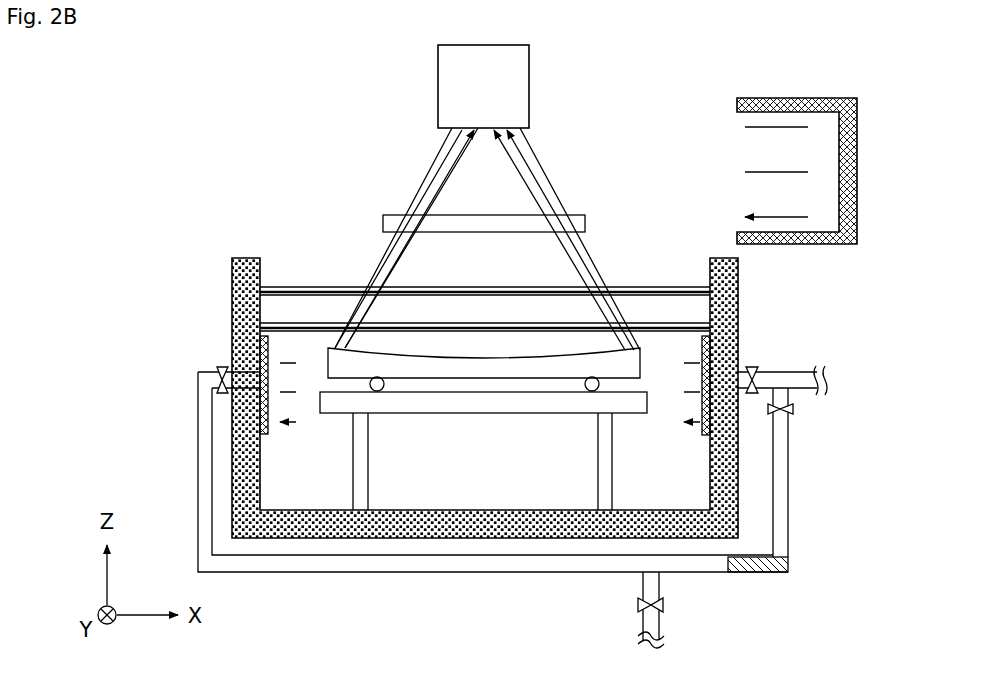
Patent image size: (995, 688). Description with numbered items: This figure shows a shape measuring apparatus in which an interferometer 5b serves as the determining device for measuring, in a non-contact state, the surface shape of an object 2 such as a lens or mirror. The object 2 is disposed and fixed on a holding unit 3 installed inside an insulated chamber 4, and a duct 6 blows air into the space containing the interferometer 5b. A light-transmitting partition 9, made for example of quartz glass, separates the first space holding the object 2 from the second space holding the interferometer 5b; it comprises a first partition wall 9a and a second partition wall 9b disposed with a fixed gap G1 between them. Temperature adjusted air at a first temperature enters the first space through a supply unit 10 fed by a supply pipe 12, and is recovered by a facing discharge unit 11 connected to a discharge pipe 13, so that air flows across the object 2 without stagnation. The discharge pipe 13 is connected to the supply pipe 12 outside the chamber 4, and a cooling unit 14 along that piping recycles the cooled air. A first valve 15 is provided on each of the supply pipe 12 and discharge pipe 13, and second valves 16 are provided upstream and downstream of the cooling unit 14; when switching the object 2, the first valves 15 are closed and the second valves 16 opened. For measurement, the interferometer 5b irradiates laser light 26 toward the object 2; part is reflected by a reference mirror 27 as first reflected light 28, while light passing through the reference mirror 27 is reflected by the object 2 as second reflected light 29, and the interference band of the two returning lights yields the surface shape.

The object 2 is at (558, 368).
The holding unit 3 is at (635, 405).
The chamber 4 is at (732, 281).
The interferometer 5b is at (520, 73).
The duct 6 is at (782, 98).
The partition 9 is at (485, 268).
The first partition wall 9a is at (619, 287).
The second partition wall 9b is at (597, 241).
The supply unit 10 is at (712, 338).
The discharge unit 11 is at (258, 338).
The supply pipe 12 is at (812, 372).
The discharge pipe 13 is at (253, 377).
The cooling unit 14 is at (790, 565).
The first valve 15 is at (222, 395).
The second valve 16 is at (790, 410).
The laser light 26 is at (526, 143).
The reference mirror 27 is at (586, 218).
The first reflected light 28 is at (530, 168).
The second reflected light 29 is at (535, 202).
The gap G1 is at (320, 311).